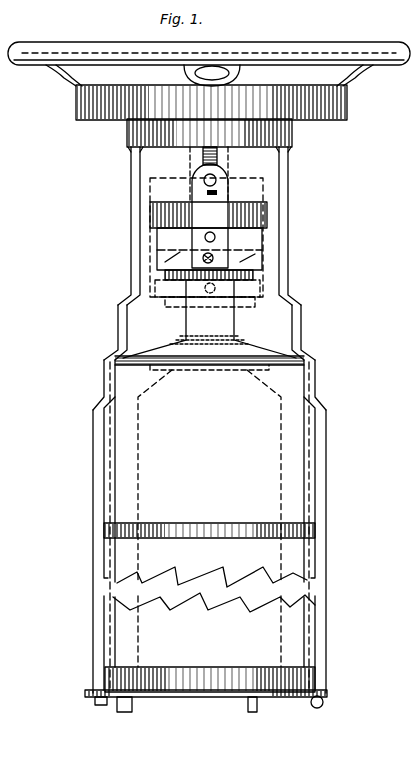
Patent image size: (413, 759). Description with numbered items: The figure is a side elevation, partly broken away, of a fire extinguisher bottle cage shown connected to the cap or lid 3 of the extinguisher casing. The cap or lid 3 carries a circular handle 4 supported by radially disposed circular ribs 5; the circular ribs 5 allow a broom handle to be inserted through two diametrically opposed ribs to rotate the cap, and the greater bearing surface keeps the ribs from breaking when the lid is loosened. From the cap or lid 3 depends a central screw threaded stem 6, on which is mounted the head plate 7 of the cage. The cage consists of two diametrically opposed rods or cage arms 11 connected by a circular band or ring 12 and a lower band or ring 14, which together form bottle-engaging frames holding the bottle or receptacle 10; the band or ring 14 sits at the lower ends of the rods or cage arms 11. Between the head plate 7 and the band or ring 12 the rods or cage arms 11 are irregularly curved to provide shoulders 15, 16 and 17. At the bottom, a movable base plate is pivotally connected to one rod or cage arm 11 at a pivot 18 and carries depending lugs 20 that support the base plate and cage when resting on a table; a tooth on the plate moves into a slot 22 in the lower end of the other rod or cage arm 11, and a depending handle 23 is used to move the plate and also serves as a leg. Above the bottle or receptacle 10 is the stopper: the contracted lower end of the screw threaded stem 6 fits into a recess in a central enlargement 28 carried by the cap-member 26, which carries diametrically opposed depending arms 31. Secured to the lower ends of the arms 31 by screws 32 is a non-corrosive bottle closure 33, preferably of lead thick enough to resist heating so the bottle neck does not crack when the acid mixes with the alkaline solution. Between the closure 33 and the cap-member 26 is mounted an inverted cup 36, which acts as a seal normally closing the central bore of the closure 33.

The cap or lid 3 is at (349, 93).
The circular handle 4 is at (333, 46).
The circular ribs 5 is at (246, 65).
The screw threaded stem 6 is at (218, 153).
The head plate 7 is at (293, 136).
The bottle or receptacle 10 is at (233, 362).
The rods or cage arms 11 is at (131, 266).
The band or ring 12 is at (233, 528).
The band or ring 14 is at (282, 676).
The shoulders 15 is at (101, 401).
The shoulders 16 is at (111, 359).
The shoulders 17 is at (121, 303).
The pivot 18 is at (320, 707).
The depending lugs 20 is at (257, 711).
The slot 22 is at (99, 705).
The depending handle 23 is at (132, 711).
The cap-member 26 is at (262, 213).
The central enlargement 28 is at (230, 188).
The depending arms 31 is at (218, 251).
The screws 32 is at (229, 258).
The non-corrosive bottle closure 33 is at (262, 256).
The inverted cup 36 is at (157, 241).